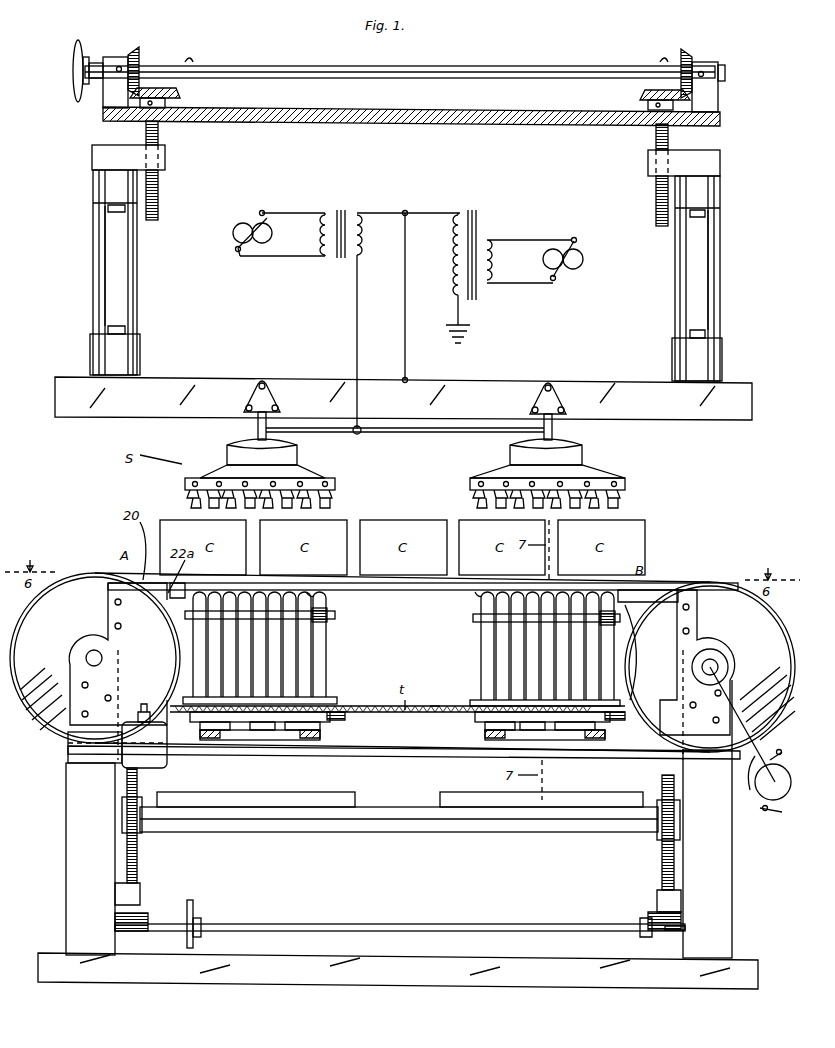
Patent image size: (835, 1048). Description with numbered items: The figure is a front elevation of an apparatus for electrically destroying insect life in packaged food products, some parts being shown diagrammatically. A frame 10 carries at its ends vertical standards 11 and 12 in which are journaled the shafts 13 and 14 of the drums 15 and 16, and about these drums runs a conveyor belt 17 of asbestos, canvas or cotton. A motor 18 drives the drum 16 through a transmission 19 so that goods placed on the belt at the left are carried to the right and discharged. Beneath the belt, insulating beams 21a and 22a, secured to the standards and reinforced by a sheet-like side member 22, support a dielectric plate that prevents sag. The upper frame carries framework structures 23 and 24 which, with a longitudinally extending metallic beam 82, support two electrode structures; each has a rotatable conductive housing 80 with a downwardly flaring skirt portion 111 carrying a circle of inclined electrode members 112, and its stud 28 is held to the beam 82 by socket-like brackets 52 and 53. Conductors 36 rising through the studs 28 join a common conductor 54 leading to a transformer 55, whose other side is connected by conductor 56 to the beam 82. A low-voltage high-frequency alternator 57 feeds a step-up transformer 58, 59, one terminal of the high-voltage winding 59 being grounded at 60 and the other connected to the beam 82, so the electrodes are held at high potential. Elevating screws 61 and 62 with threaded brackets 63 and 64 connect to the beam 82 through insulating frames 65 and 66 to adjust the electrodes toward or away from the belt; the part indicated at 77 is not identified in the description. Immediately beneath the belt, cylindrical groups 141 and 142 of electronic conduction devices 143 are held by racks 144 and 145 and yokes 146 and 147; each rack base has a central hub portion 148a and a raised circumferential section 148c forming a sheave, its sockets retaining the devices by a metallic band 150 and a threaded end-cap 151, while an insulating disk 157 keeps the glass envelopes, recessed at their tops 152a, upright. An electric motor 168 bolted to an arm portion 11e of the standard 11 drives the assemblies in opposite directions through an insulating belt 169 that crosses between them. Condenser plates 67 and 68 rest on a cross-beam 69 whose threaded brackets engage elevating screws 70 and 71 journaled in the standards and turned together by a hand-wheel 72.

The frame 10 is at (278, 128).
The vertical standard 11 is at (70, 837).
The outwardly projecting arm portion 11e is at (88, 765).
The vertical standard 12 is at (725, 855).
The shaft 13 is at (100, 648).
The shaft 14 is at (718, 660).
The drum 15 is at (75, 583).
The drum 16 is at (747, 583).
The conveyor belt 17 is at (425, 583).
The motor 18 is at (770, 800).
The transmission 19 is at (765, 745).
The insulating beam 21a is at (160, 620).
The side member 22 is at (82, 678).
The insulating beam 22a is at (80, 625).
The framework structure 23 is at (92, 248).
The framework structure 24 is at (720, 240).
The stud 28 is at (258, 425).
The conductor 36 is at (410, 437).
The socket-like bracket 52 is at (272, 395).
The socket-like bracket 53 is at (556, 397).
The common conductor 54 is at (362, 348).
The transformer 55 is at (342, 260).
The conductor 56 is at (405, 283).
The alternator 57 is at (567, 268).
The step-up transformer 58 is at (484, 292).
The high voltage winding 59 is at (456, 283).
The ground 60 is at (466, 337).
The elevating screw 61 is at (160, 191).
The elevating screw 62 is at (656, 200).
The threaded bracket 63 is at (98, 157).
The threaded bracket 64 is at (720, 160).
The insulating frame 65 is at (102, 287).
The insulating frame 66 is at (722, 275).
The condenser plate 67 is at (330, 790).
The condenser plate 68 is at (503, 778).
The cross-beam support 69 is at (372, 820).
The elevating screw 70 is at (140, 855).
The elevating screw 71 is at (656, 860).
The hand-wheel 72 is at (197, 905).
The spray unit 77 is at (408, 471).
The rotatable housing 80 is at (225, 452).
The beam 82 is at (218, 388).
The skirt portion 111 is at (310, 470).
The electrode member 112 is at (188, 502).
The cylindrical group 141 is at (377, 648).
The cylindrical group 142 is at (630, 660).
The electronic conduction device 143 is at (290, 667).
The rack 144 is at (345, 700).
The circular rack 145 is at (450, 683).
The supporting yoke 146 is at (270, 742).
The supporting yoke 147 is at (560, 745).
The central hub portion 148a is at (345, 716).
The raised circumferential section 148c is at (345, 700).
The metallic circular band 150 is at (320, 615).
The cup-shaped end-cap 151 is at (495, 735).
The recessed end 152a is at (320, 605).
The flat circular disk 157 is at (328, 623).
The electric motor 168 is at (155, 765).
The belt 169 is at (415, 735).